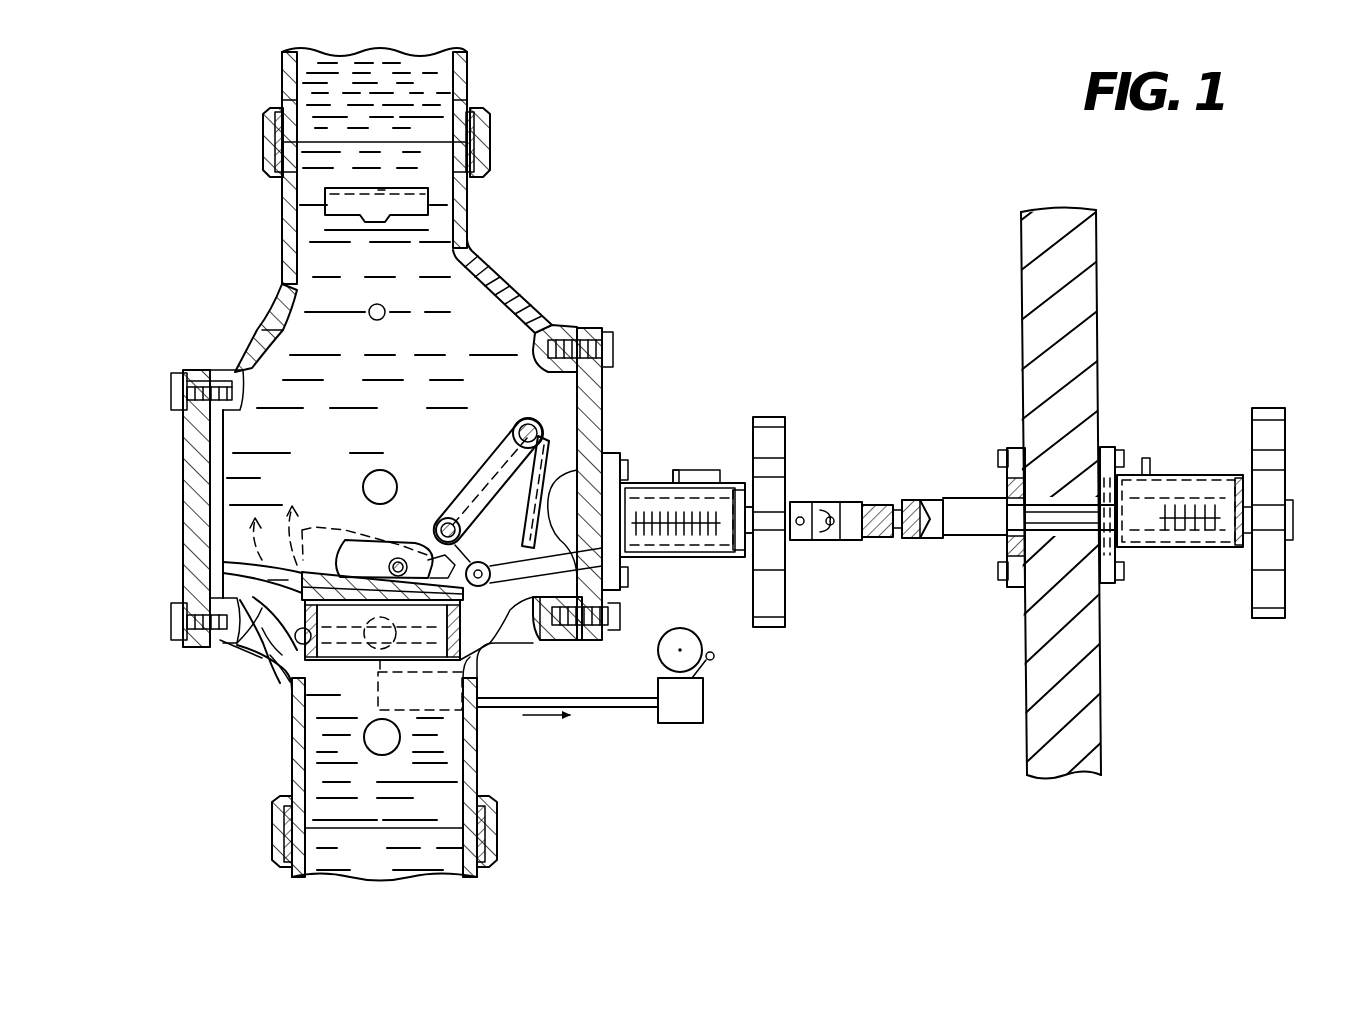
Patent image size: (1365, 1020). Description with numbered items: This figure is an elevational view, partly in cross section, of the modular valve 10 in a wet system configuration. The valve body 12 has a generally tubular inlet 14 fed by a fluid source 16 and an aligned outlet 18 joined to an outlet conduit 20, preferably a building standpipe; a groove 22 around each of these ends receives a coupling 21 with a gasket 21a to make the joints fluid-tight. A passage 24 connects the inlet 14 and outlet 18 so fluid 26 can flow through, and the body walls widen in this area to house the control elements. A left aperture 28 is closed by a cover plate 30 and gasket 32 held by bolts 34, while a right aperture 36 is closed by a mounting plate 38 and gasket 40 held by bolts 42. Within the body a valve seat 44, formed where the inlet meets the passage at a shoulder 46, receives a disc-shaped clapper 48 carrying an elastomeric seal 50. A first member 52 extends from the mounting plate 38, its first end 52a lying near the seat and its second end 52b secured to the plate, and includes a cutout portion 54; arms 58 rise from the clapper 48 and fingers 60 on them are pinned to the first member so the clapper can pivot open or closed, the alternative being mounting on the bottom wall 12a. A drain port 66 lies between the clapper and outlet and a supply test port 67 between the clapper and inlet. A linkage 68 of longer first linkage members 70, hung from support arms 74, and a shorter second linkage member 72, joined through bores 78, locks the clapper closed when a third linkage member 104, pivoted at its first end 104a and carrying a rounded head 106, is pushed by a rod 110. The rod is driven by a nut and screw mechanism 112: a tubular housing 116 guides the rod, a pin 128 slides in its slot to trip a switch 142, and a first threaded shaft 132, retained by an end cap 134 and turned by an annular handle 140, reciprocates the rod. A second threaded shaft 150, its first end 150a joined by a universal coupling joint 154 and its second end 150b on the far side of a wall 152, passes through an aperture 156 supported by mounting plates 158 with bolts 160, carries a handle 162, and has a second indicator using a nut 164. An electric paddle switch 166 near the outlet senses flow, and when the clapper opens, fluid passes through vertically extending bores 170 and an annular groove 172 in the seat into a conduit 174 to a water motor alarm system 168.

The valve 10 is at (668, 122).
The valve body 12 is at (505, 300).
The bottom wall 12a is at (580, 630).
The inlet 14 is at (478, 780).
The fluid source 16 is at (490, 866).
The outlet 18 is at (455, 192).
The outlet conduit 20 is at (472, 70).
The coupling 21 is at (265, 130).
The gasket 21a is at (270, 150).
The groove 22 is at (280, 108).
The passage 24 is at (285, 332).
The fluid 26 is at (358, 406).
The aperture 28 is at (218, 440).
The cover plate 30 is at (190, 496).
The gasket 32 is at (185, 642).
The bolts 34 is at (178, 385).
The aperture 36 is at (602, 388).
The mounting plate 38 is at (612, 340).
The gasket 40 is at (596, 330).
The bolts 42 is at (612, 352).
The valve seat 44 is at (277, 660).
The shoulder 46 is at (288, 682).
The clapper 48 is at (300, 585).
The seal 50 is at (245, 612).
The first member 52 is at (438, 665).
The first end 52a is at (375, 658).
The second end 52b is at (525, 470).
The cutout portion 54 is at (548, 642).
The arms 58 is at (300, 550).
The finger 60 is at (469, 560).
The drain port 66 is at (377, 470).
The supply test port 67 is at (398, 755).
The linkage 68 is at (385, 434).
The first linkage member 70 is at (470, 492).
The second linkage member 72 is at (318, 505).
The support arms 74 is at (517, 420).
The bores 78 is at (436, 524).
The third linkage member 104 is at (597, 457).
The first end 104a is at (548, 437).
The rounded head 106 is at (498, 628).
The rod 110 is at (628, 560).
The nut and screw mechanism 112 is at (712, 434).
The tubular housing 116 is at (690, 560).
The pin 128 is at (702, 472).
The first threaded shaft 132 is at (772, 560).
The end cap 134 is at (736, 557).
The annular handle 140 is at (770, 420).
The switch 142 is at (680, 478).
The second threaded shaft 150 is at (1000, 500).
The first end 150a is at (880, 508).
The second end 150b is at (1240, 478).
The wall 152 is at (1068, 489).
The universal coupling joint 154 is at (820, 540).
The aperture 156 is at (1030, 642).
The mounting plates 158 is at (1107, 445).
The bolts 160 is at (1003, 450).
The handle 162 is at (1282, 440).
The nut 164 is at (1160, 548).
The electric paddle switch 166 is at (378, 190).
The water motor alarm system 168 is at (704, 696).
The vertically extending bores 170 is at (382, 630).
The annular groove 172 is at (298, 638).
The conduit 174 is at (625, 708).